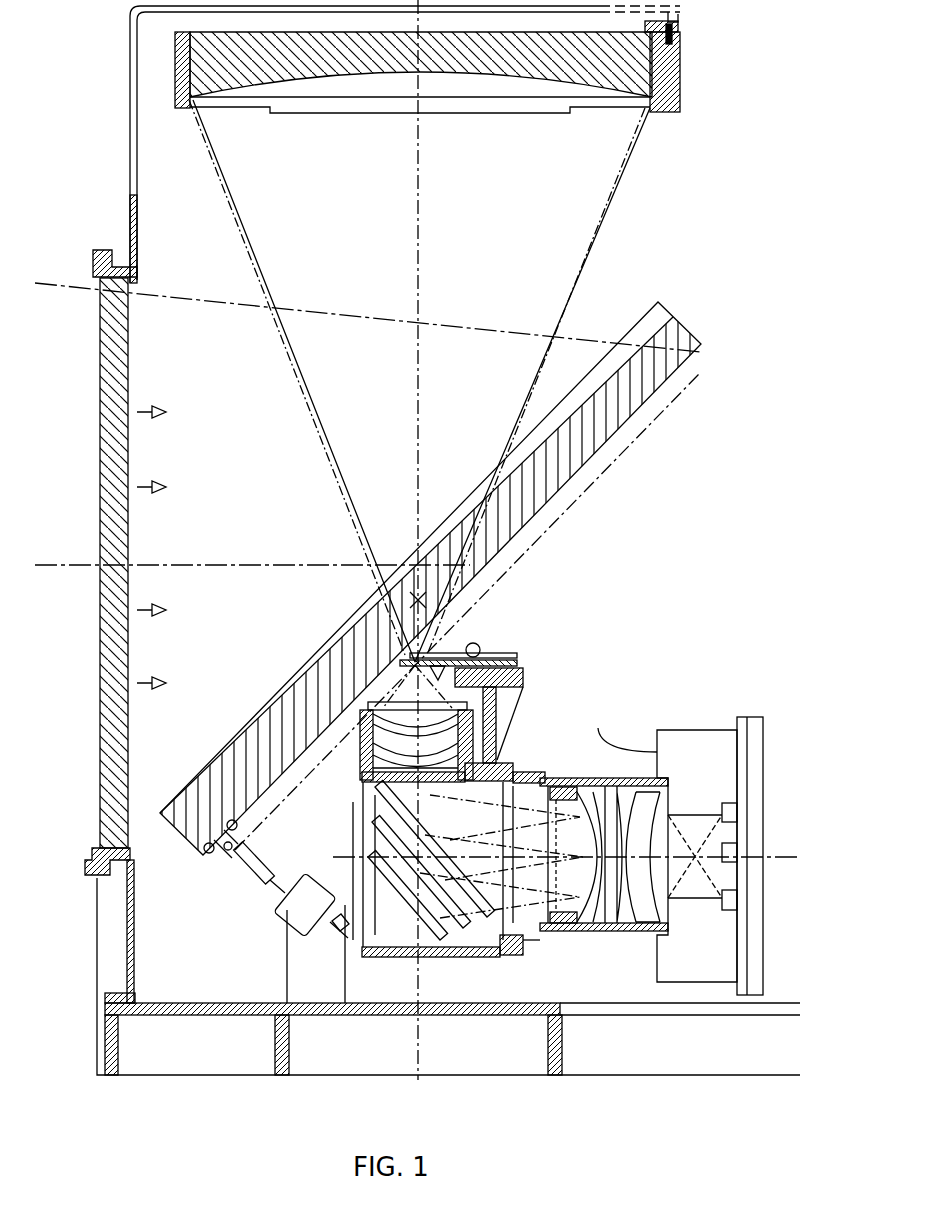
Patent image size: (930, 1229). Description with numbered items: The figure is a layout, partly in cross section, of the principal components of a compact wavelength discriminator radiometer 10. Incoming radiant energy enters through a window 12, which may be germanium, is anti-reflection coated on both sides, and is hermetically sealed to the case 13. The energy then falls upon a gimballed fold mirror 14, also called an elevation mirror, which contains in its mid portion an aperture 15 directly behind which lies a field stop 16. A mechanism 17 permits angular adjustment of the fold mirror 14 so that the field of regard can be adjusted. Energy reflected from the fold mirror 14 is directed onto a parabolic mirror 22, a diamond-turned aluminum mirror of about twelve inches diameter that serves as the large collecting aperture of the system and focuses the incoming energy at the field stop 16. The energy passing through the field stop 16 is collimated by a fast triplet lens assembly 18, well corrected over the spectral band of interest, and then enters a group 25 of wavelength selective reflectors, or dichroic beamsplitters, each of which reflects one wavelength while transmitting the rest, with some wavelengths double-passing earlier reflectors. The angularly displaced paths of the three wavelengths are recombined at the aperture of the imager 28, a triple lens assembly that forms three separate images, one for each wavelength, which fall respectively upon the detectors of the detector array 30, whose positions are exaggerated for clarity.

The wavelength discriminator radiometer 10 is at (700, 183).
The window 12 is at (98, 318).
The case 13 is at (128, 150).
The gimballed fold mirror 14 is at (637, 348).
The aperture 15 is at (500, 550).
The field stop 16 is at (452, 655).
The mechanism 17 is at (307, 908).
The triplet lens assembly 18 is at (346, 752).
The parabolic mirror 22 is at (680, 91).
The group of wavelength selective reflectors 25 is at (382, 922).
The imager 28 is at (612, 967).
The detector array 30 is at (700, 752).